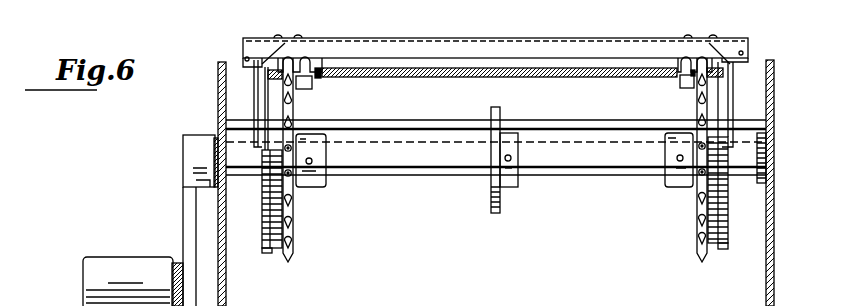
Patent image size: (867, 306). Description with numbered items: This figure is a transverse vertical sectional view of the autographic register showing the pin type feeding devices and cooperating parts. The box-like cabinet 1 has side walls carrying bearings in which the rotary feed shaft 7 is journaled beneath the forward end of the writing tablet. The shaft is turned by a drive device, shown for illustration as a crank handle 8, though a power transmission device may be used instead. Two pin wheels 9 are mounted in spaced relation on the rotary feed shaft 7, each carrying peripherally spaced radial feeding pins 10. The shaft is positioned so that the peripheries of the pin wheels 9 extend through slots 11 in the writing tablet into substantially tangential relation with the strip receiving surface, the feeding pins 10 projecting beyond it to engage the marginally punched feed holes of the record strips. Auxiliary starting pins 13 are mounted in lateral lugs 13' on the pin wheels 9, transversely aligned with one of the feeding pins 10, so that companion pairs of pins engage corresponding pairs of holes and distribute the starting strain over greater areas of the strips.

The cabinet 1 is at (218, 93).
The rotary feed shaft 7 is at (395, 167).
The crank handle 8 is at (108, 257).
The pin wheels 9 is at (279, 248).
The feeding pins 10 is at (292, 252).
The slots 11 is at (325, 66).
The auxiliary starting pins 13 is at (495, 39).
The lateral lugs 13' is at (495, 97).